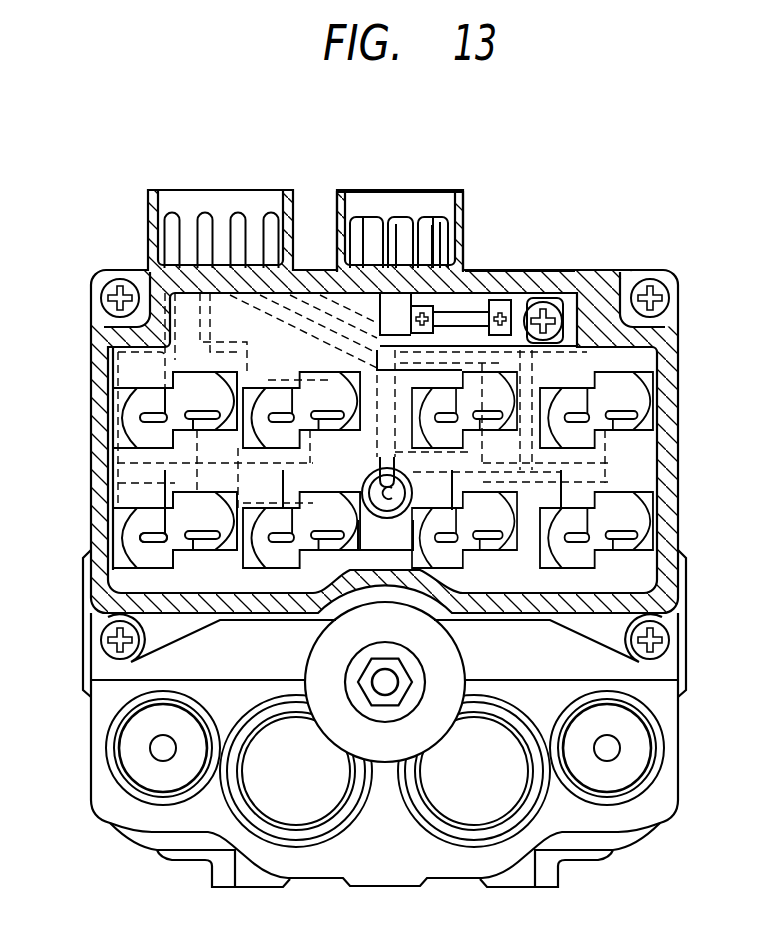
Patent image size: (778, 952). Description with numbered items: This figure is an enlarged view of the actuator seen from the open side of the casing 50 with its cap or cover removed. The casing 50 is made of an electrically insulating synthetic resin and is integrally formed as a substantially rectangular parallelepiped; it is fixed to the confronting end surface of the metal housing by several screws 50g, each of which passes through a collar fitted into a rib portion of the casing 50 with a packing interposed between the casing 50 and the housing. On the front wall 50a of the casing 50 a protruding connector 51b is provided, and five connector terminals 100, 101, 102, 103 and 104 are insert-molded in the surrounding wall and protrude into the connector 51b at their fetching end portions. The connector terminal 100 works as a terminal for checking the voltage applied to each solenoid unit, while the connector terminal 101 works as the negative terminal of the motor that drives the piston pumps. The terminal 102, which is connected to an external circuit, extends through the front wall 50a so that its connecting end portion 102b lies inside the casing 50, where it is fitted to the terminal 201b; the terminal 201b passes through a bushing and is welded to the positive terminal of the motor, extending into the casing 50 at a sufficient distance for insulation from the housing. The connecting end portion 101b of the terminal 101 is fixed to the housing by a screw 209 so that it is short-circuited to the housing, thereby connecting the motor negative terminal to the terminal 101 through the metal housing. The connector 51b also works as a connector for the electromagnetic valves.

The casing 50 is at (595, 280).
The front wall 50a is at (502, 273).
The screw 50g is at (121, 279).
The connector 51b is at (338, 190).
The connector terminal 100 is at (366, 224).
The connector terminal 101 is at (372, 223).
The connecting end portion 101b is at (511, 300).
The terminal 102 is at (404, 224).
The connecting end portion 102b is at (360, 503).
The connector terminal 103 is at (431, 225).
The connector terminal 104 is at (446, 222).
The terminal 201b is at (400, 493).
The screw 209 is at (557, 310).